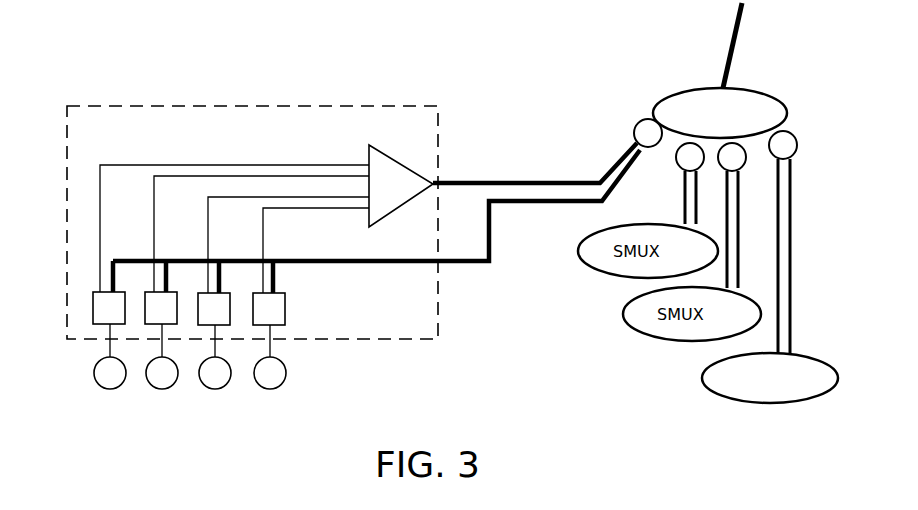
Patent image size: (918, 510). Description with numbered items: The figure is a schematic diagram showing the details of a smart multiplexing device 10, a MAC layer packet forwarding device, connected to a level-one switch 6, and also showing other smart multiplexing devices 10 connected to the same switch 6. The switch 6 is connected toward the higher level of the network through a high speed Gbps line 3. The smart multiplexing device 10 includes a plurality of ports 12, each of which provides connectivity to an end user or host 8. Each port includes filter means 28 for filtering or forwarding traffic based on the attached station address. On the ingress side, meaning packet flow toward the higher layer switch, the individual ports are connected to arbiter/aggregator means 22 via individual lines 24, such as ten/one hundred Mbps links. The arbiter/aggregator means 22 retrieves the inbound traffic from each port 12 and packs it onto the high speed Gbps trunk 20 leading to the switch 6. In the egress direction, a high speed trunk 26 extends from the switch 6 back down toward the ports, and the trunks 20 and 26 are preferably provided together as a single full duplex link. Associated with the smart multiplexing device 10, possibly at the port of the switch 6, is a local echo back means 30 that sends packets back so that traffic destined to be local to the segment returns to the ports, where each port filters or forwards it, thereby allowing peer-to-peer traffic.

The high speed Gbps line 3 is at (742, 25).
The level 1 switch 6 is at (770, 108).
The host 8 is at (113, 388).
The smart multiplexing device 10 is at (350, 116).
The port 12 is at (262, 336).
The Gbps trunk 20 is at (546, 180).
The arbiter/aggregator means 22 is at (402, 162).
The individual line 24 is at (128, 163).
The high speed trunk 26 is at (525, 207).
The filter means 28 is at (93, 303).
The local echo back means 30 is at (642, 121).